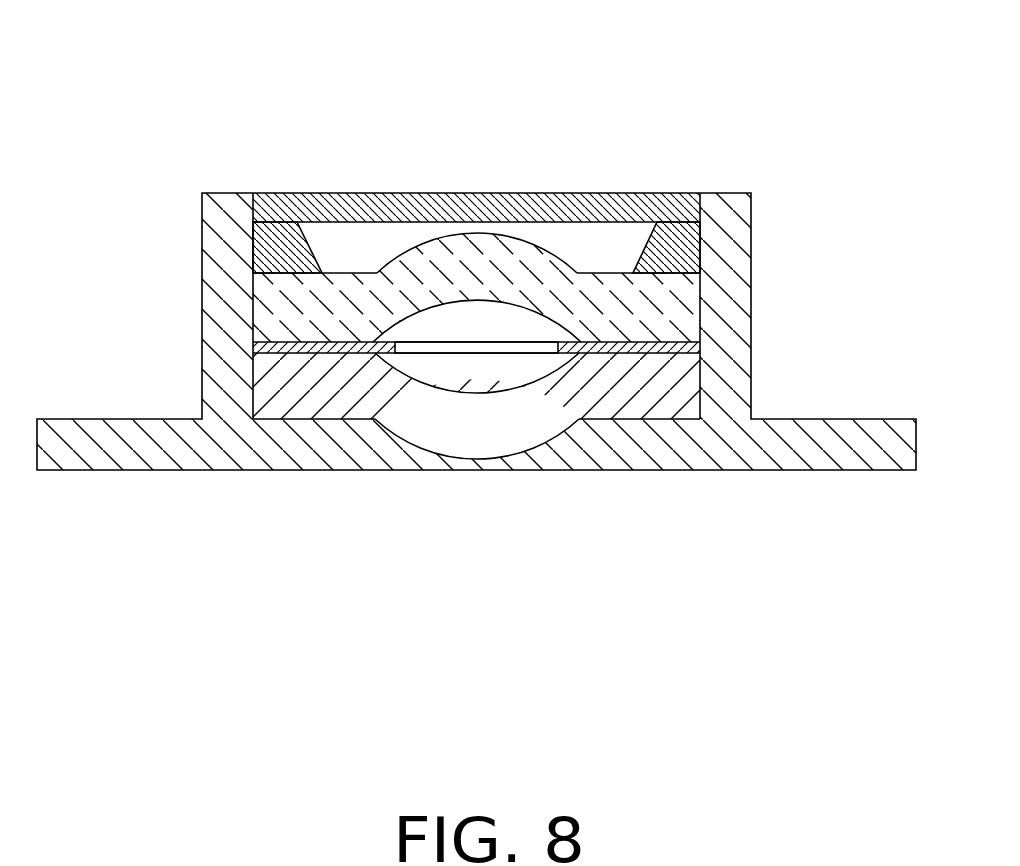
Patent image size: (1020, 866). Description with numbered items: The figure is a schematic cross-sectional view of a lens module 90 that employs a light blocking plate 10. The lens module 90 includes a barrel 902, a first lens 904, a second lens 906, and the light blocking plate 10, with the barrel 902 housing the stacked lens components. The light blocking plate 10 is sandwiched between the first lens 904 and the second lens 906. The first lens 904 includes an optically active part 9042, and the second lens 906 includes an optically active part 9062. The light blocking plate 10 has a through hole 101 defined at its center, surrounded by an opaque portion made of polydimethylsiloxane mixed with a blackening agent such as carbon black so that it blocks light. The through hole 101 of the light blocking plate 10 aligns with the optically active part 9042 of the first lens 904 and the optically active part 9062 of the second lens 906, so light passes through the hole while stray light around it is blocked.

The lens module 90 is at (476, 236).
The barrel 902 is at (150, 452).
The first lens 904 is at (675, 308).
The optically active part 9042 is at (469, 277).
The second lens 906 is at (660, 395).
The optically active part 9062 is at (507, 423).
The light blocking plate 10 is at (390, 345).
The through hole 101 is at (478, 349).